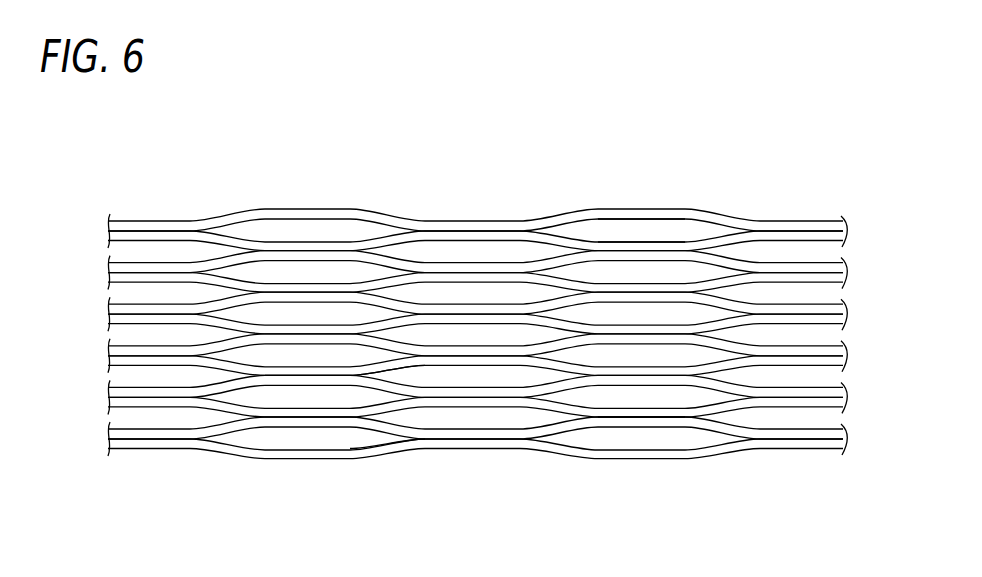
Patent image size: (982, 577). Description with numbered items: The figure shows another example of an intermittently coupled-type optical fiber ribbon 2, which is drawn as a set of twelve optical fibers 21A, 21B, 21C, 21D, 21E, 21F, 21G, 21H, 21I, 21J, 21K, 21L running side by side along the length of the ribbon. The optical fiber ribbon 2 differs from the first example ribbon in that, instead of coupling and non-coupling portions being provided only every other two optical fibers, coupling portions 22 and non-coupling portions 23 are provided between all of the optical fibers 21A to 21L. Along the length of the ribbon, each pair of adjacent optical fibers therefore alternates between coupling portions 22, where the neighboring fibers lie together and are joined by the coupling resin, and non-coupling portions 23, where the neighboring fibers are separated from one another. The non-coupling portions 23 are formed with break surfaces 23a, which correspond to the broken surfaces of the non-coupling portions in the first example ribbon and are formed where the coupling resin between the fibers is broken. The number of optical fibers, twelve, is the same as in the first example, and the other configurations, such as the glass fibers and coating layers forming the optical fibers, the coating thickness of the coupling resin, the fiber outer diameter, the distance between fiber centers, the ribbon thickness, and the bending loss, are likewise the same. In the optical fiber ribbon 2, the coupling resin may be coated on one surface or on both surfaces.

The intermittently coupled-type optical fiber ribbon 2 is at (716, 153).
The optical fiber 21A is at (108, 226).
The optical fiber 21B is at (108, 235).
The optical fiber 21C is at (108, 268).
The optical fiber 21D is at (108, 277).
The optical fiber 21E is at (108, 309).
The optical fiber 21F is at (108, 318).
The optical fiber 21G is at (108, 351).
The optical fiber 21H is at (108, 360).
The optical fiber 21I is at (108, 392).
The optical fiber 21J is at (108, 401).
The optical fiber 21K is at (108, 434).
The optical fiber 21L is at (108, 443).
The coupling portion 22 is at (303, 378).
The non-coupling portion 23 is at (443, 374).
The break surface 23a is at (656, 239).